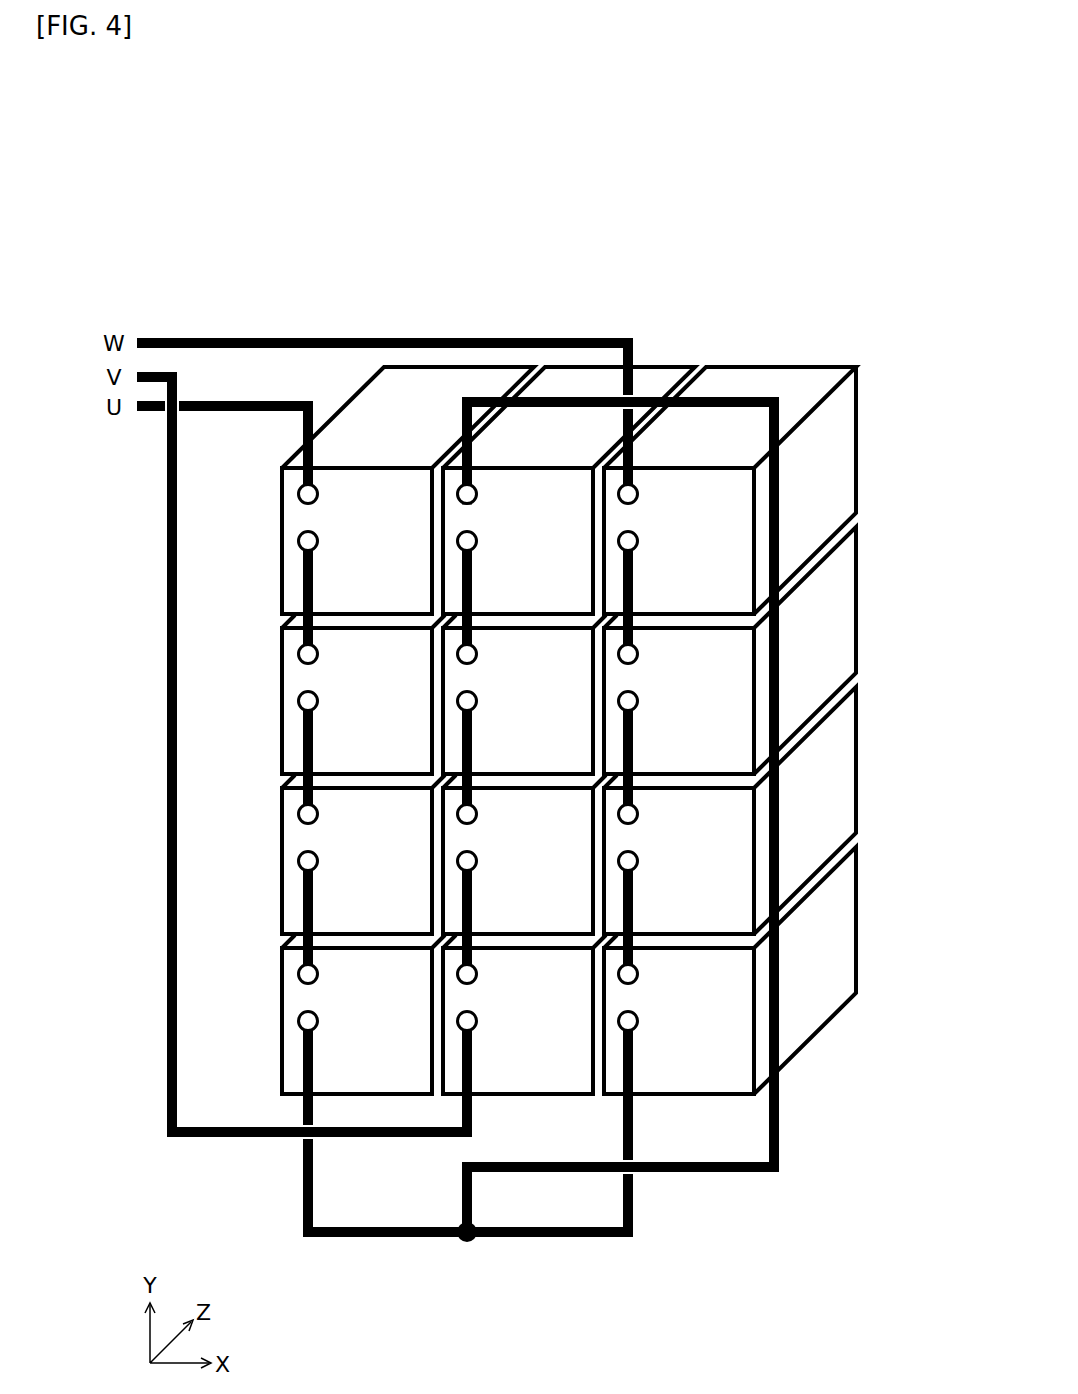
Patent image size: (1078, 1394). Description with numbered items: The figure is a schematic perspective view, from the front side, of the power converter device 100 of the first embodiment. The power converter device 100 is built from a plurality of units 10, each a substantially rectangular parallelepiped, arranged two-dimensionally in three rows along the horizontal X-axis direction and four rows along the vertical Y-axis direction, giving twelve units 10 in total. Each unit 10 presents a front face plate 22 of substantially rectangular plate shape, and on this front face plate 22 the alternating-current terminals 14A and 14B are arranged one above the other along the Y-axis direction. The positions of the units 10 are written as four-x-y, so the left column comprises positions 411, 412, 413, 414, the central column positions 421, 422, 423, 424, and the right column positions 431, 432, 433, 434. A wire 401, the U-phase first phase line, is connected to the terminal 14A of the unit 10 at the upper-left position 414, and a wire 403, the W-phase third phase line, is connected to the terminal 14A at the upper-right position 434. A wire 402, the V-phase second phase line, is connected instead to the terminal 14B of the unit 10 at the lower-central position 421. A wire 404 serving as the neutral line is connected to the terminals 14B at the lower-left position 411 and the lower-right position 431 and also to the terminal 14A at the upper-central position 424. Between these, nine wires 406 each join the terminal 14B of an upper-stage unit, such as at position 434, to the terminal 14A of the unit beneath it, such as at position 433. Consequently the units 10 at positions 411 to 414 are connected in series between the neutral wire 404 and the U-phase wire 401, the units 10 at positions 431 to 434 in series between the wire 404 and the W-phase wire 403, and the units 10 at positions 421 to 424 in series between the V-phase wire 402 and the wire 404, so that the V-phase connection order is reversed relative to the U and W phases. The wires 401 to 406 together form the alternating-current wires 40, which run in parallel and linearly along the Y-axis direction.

The power converter device 100 is at (882, 351).
The unit 10 is at (568, 730).
The alternating-current terminal 14A is at (454, 741).
The alternating-current terminal 14B is at (454, 779).
The front face plate 22 is at (373, 570).
The alternating-current wires 40 is at (428, 307).
The wire 401 is at (243, 414).
The wire 402 is at (166, 491).
The wire 403 is at (330, 338).
The wire 404 is at (470, 1243).
The wire 406 is at (472, 885).
The position 411 is at (333, 1076).
The position 412 is at (333, 916).
The position 413 is at (333, 756).
The position 414 is at (333, 596).
The position 421 is at (501, 1076).
The position 422 is at (501, 916).
The position 423 is at (501, 756).
The position 424 is at (501, 596).
The position 431 is at (670, 1076).
The position 432 is at (670, 916).
The position 433 is at (670, 756).
The position 434 is at (670, 596).